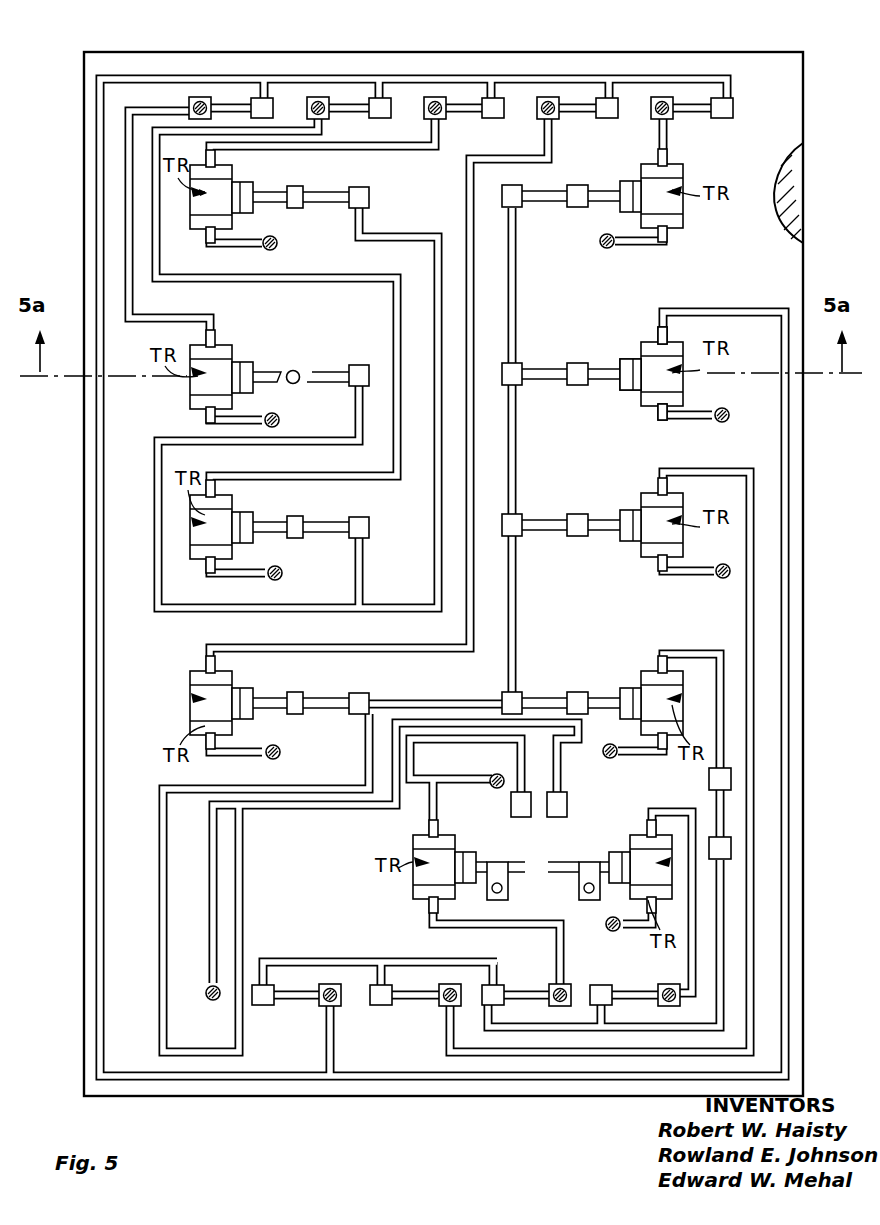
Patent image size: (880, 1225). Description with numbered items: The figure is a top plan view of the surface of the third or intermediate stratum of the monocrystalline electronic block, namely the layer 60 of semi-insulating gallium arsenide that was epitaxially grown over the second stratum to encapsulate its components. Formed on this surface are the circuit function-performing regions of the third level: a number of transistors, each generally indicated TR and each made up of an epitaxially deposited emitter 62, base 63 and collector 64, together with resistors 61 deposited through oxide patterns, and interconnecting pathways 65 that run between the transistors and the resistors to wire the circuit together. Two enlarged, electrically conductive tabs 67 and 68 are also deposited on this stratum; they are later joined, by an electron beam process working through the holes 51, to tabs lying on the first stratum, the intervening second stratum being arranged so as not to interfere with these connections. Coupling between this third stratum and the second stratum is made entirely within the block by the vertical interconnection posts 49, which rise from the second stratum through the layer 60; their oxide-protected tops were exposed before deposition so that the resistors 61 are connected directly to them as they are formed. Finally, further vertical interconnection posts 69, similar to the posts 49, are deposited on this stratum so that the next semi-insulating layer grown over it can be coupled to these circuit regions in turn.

The vertical interconnection posts 49 is at (293, 370).
The holes 51 is at (493, 862).
The layer of semi-insulating gallium arsenide 60 is at (803, 184).
The resistors 61 is at (236, 103).
The emitter 62 is at (640, 398).
The base 63 is at (622, 358).
The collector 64 is at (658, 332).
The interconnecting pathways 65 is at (447, 75).
The tab 67 is at (507, 890).
The tab 68 is at (588, 900).
The vertical interconnection posts 69 is at (200, 97).